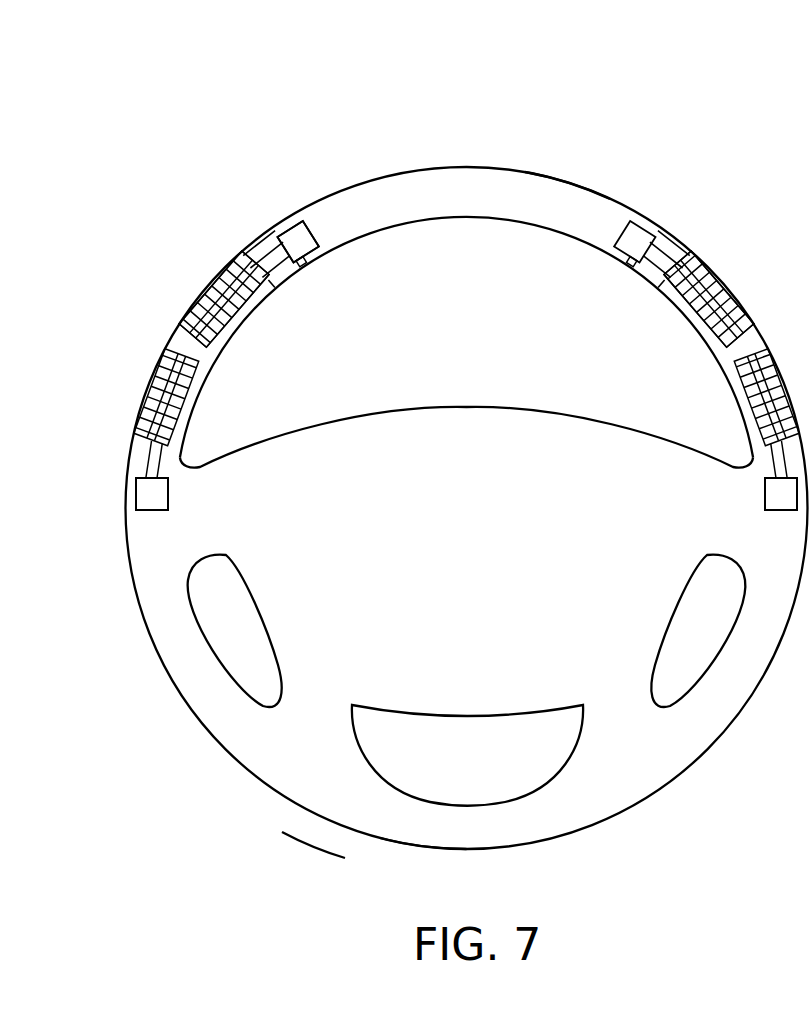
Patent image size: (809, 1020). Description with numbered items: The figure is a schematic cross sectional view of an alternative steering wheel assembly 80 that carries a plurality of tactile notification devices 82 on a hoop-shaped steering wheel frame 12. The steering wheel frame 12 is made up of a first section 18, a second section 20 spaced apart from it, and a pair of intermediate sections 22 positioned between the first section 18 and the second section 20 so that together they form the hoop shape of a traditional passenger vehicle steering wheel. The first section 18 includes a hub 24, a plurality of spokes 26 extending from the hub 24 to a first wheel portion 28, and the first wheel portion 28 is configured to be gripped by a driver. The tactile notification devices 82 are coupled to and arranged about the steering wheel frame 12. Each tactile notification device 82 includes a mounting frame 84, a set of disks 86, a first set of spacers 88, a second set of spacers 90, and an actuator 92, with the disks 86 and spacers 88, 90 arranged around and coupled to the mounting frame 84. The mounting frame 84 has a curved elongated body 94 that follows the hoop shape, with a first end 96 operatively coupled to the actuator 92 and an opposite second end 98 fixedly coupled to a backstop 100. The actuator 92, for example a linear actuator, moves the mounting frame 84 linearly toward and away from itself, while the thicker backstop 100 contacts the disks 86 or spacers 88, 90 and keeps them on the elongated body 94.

The steering wheel frame 12 is at (468, 158).
The first section 18 is at (311, 826).
The second section 20 is at (540, 171).
The intermediate sections 22 is at (182, 338).
The hub 24 is at (462, 407).
The spokes 26 is at (200, 463).
The first wheel portion 28 is at (386, 846).
The alternative steering wheel assembly 80 is at (232, 205).
The tactile notification devices 82 is at (190, 257).
The mounting frame 84 is at (262, 245).
The set of disks 86 is at (270, 277).
The first set of spacers 88 is at (266, 296).
The second set of spacers 90 is at (244, 280).
The actuator 92 is at (316, 222).
The elongated body 94 is at (220, 325).
The first end 96 is at (302, 256).
The second end 98 is at (202, 341).
The backstop 100 is at (217, 342).